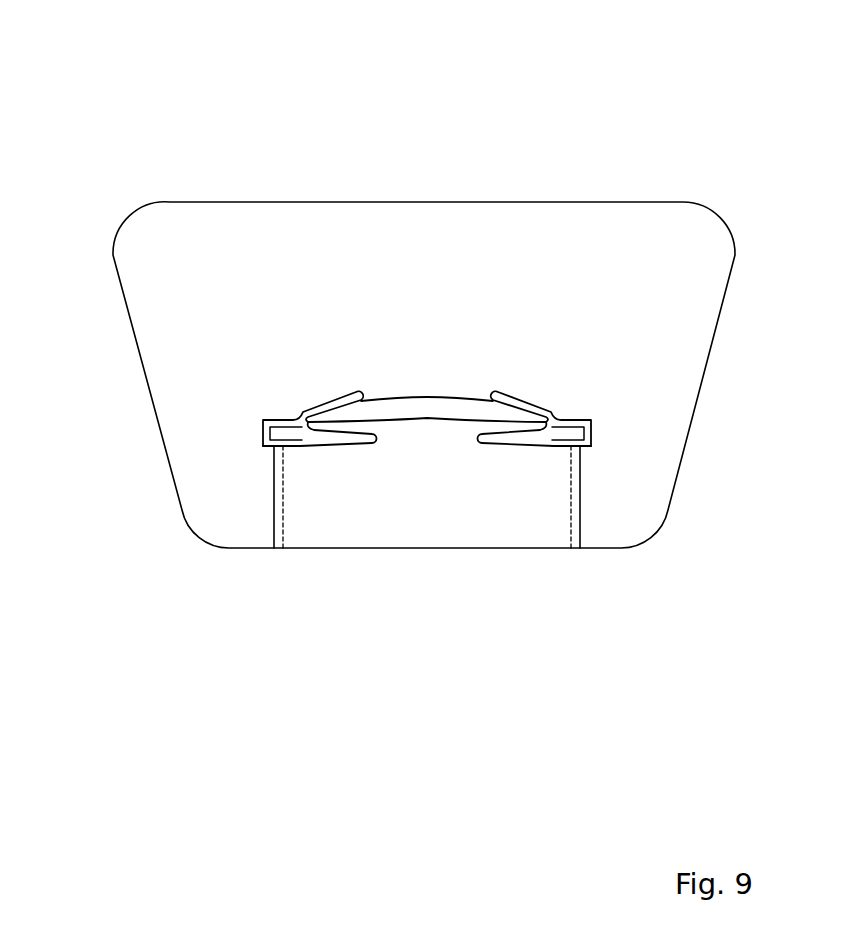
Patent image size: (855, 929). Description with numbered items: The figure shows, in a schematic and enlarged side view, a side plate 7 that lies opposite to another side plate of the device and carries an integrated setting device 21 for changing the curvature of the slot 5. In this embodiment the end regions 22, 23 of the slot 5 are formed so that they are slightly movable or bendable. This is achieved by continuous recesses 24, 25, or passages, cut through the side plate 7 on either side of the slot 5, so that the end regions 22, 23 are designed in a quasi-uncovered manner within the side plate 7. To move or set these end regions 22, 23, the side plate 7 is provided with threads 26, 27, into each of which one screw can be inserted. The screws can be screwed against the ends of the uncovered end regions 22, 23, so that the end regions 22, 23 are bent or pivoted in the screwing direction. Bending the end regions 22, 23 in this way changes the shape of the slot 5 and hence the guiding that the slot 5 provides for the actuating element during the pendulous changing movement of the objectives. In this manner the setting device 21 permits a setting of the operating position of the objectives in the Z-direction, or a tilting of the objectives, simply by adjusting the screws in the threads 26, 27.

The slot 5 is at (420, 409).
The side plate 7 is at (258, 202).
The setting device 21 is at (152, 493).
The end region of the slot 22 is at (528, 441).
The end region of the slot 23 is at (340, 441).
The continuous recess 24 is at (556, 419).
The continuous recess 25 is at (298, 419).
The thread 26 is at (578, 503).
The thread 27 is at (273, 513).